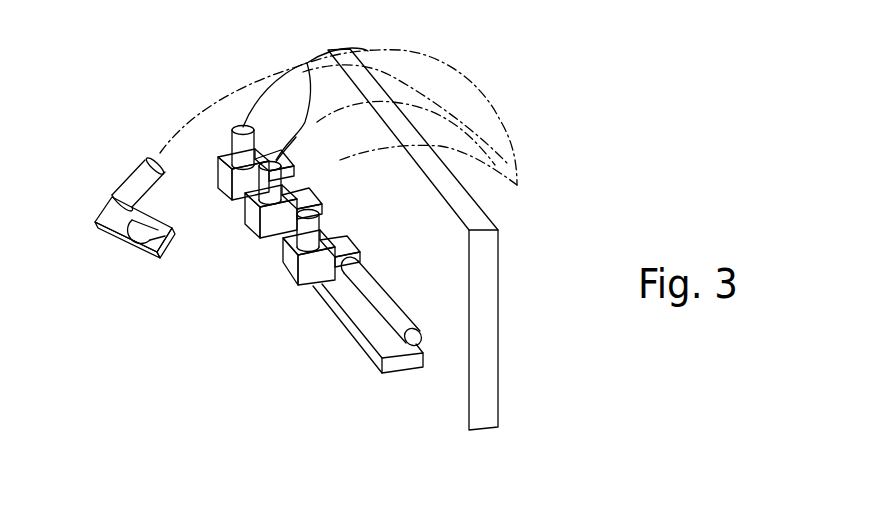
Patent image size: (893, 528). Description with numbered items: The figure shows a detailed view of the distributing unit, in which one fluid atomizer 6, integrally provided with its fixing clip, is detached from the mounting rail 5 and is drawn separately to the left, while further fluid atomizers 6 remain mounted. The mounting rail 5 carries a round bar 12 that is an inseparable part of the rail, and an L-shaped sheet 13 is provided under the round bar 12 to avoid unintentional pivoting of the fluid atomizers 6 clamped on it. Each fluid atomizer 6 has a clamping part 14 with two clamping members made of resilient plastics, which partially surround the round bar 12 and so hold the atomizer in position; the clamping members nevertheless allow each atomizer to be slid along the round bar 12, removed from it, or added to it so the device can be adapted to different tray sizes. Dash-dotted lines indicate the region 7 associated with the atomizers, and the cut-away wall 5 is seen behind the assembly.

The mounting rail 5 is at (482, 270).
The fluid atomizer 6 is at (227, 188).
The cable routing 7 is at (472, 77).
The round bar 12 is at (382, 297).
The L-shaped sheet 13 is at (382, 342).
The clamping part 14 is at (123, 225).